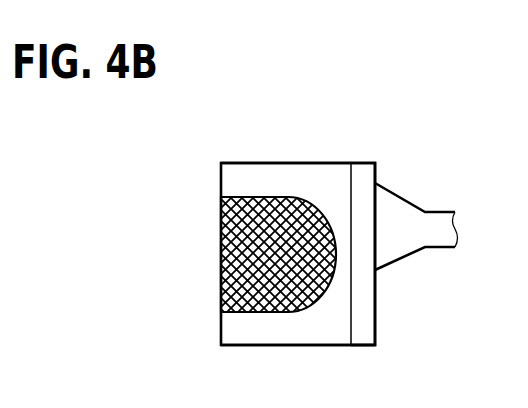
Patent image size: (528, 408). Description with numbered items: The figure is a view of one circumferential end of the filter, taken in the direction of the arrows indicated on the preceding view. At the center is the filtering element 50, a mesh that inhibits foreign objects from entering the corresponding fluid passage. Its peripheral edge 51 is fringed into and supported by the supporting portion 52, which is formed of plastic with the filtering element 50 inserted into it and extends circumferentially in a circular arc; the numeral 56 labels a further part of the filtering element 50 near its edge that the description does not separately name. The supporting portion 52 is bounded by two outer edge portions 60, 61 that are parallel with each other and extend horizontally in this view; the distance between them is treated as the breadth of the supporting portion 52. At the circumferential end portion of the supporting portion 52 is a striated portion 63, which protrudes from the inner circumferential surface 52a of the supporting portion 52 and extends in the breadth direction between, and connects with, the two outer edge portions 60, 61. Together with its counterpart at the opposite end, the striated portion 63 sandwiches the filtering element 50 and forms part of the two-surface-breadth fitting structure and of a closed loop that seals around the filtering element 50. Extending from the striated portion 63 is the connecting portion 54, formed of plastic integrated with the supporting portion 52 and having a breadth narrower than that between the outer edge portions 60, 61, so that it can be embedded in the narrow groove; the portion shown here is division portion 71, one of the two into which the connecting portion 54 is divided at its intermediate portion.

The outer edge portion 60 is at (247, 163).
The peripheral edge 51 is at (250, 196).
The filtering element 50 is at (232, 238).
The lower edge of cleaning member 56 is at (232, 292).
The outer edge portion 61 is at (277, 347).
The supporting portion 52 is at (322, 330).
The inner circumferential surface 52a is at (318, 185).
The striated portion 63 is at (363, 178).
The division portion 71 is at (440, 215).
The connecting portion 54 is at (442, 238).